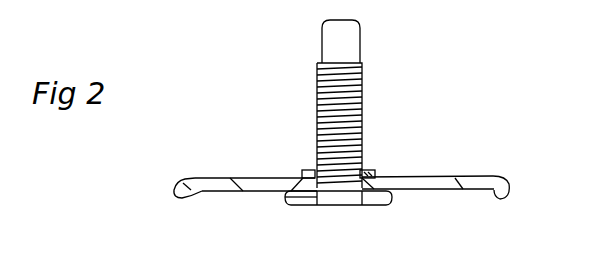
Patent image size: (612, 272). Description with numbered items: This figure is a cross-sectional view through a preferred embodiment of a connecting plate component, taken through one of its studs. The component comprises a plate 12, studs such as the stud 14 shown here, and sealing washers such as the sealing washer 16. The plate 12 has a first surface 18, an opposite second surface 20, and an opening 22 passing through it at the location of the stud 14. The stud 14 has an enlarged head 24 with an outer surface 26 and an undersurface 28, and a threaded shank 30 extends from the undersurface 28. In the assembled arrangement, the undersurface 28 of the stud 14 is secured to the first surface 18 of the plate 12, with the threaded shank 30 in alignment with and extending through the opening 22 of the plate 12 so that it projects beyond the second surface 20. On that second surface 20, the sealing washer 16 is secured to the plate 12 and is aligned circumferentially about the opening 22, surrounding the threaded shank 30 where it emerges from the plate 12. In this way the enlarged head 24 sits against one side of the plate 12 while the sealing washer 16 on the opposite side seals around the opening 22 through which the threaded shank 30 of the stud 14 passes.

The plate 12 is at (193, 161).
The stud 14 is at (338, 212).
The sealing washer 16 is at (303, 170).
The first surface 18 is at (225, 192).
The second surface 20 is at (226, 177).
The opening 22 is at (383, 181).
The enlarged head 24 is at (393, 198).
The outer surface 26 is at (297, 208).
The undersurface 28 is at (323, 194).
The threaded shank 30 is at (362, 78).